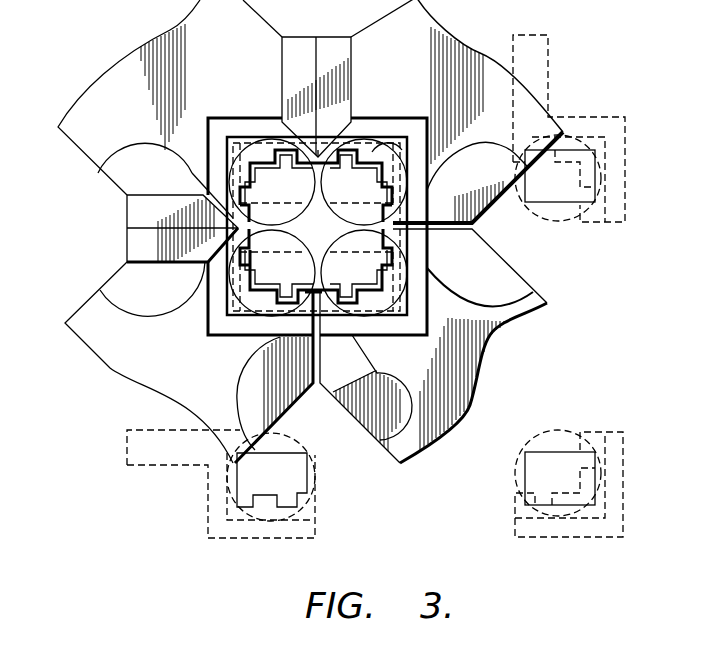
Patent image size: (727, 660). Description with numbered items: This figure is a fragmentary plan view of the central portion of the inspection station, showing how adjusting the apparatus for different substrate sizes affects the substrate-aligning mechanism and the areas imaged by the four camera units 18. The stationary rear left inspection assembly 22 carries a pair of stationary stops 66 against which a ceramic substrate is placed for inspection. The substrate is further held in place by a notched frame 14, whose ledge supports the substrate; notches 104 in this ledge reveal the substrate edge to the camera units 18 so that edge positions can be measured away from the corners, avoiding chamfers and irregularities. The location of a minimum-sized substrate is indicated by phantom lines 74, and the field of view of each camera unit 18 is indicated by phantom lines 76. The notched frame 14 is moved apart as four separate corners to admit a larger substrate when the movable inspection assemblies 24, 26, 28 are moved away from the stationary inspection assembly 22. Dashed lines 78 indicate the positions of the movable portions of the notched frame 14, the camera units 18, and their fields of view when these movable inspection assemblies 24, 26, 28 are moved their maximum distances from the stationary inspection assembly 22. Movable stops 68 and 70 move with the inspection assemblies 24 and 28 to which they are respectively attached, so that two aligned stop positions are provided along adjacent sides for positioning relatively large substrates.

The notched frame 14 is at (218, 152).
The camera unit 18 is at (297, 205).
The stationary inspection assembly 22 is at (98, 172).
The inspection assembly 24 is at (498, 204).
The inspection assembly 26 is at (352, 415).
The inspection assembly 28 is at (97, 288).
The stationary stops 66 is at (282, 83).
The movable stop 68 is at (352, 67).
The movable stop 70 is at (167, 265).
The phantom lines 74 is at (370, 150).
The phantom lines 76 is at (428, 270).
The dashed lines 78 is at (548, 118).
The notches 104 is at (233, 302).